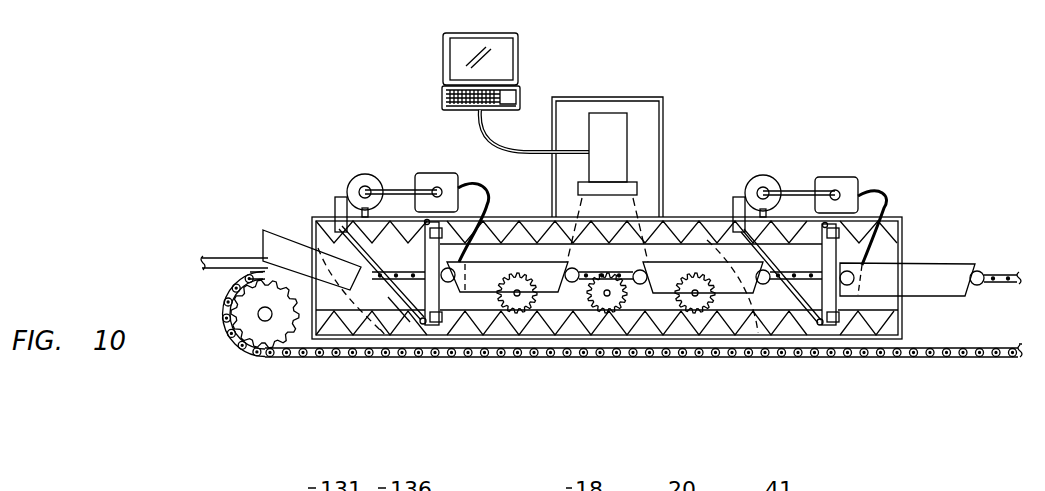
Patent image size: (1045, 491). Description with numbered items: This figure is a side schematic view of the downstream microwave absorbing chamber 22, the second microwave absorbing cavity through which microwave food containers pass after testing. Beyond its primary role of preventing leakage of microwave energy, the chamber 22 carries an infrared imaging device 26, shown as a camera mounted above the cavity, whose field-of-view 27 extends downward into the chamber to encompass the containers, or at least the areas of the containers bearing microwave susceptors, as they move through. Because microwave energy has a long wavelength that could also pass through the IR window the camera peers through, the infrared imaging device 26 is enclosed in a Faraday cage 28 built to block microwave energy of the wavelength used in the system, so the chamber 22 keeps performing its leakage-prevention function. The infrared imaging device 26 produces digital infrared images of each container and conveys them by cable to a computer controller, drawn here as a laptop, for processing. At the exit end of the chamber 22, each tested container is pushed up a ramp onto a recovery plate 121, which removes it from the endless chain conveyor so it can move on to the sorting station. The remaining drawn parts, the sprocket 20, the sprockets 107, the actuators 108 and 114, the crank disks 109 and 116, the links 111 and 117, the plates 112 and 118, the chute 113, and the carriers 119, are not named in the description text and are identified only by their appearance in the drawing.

The drive sprocket 20 is at (250, 310).
The downstream microwave absorbing chamber 22 is at (541, 203).
The infrared imaging device 26 is at (627, 145).
The field-of-view 27 is at (633, 207).
The Faraday cage 28 is at (663, 112).
The support sprockets 107 is at (643, 330).
The right actuator 108 is at (837, 175).
The right crank disk 109 is at (763, 172).
The right link 111 is at (789, 292).
The right diverter plate 112 is at (850, 312).
The discharge chute 113 is at (868, 278).
The left actuator 114 is at (432, 173).
The left crank disk 116 is at (357, 172).
The left link 117 is at (386, 312).
The left diverter plate 118 is at (397, 325).
The carrier trough 119 is at (466, 278).
The recovery plate 121 is at (232, 252).